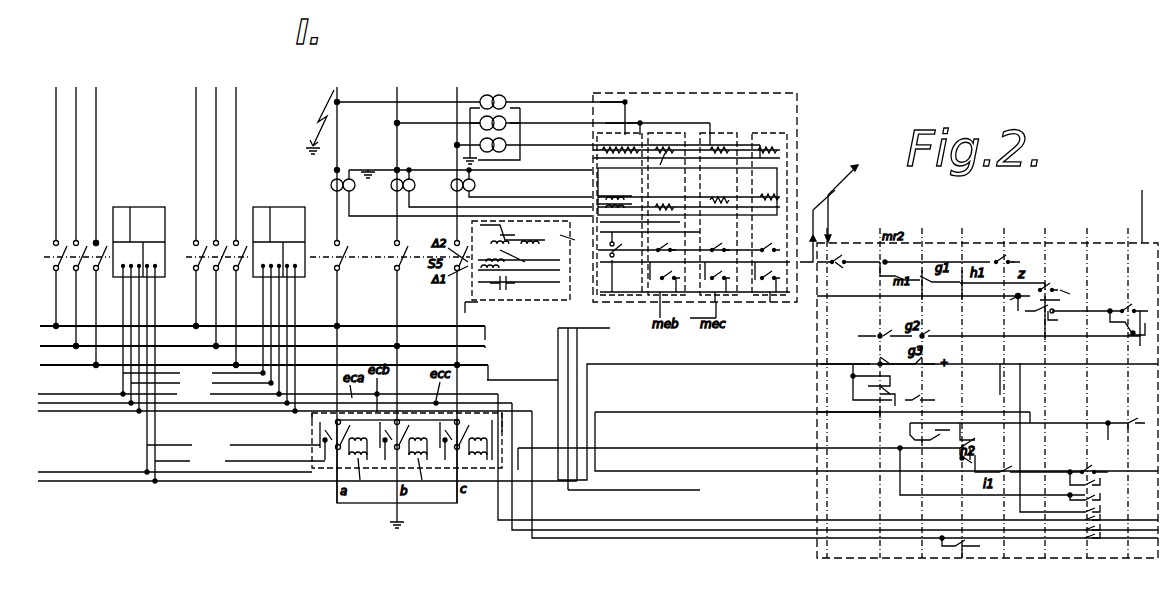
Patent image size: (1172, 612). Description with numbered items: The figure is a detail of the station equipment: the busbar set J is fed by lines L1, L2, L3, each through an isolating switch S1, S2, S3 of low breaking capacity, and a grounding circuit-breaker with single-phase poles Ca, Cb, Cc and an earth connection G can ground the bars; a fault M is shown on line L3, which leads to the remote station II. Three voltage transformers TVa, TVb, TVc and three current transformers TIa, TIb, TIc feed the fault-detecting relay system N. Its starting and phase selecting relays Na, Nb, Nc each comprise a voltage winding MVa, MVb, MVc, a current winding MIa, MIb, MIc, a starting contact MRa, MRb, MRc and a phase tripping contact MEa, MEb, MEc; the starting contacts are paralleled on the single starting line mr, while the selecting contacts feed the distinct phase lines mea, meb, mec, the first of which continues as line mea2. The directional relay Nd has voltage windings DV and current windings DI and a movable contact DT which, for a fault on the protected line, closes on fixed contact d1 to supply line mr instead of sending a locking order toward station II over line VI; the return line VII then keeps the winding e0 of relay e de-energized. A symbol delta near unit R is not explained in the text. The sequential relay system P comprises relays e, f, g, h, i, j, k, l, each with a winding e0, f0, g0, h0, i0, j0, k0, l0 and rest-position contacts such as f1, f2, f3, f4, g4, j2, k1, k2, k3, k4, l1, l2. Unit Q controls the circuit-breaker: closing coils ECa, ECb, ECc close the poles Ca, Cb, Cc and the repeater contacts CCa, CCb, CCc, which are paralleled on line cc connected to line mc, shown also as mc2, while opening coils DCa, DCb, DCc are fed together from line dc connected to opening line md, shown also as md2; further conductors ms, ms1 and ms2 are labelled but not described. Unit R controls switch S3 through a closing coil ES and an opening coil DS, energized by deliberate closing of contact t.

The feeder line L1 is at (81, 211).
The feeder line L2 is at (221, 211).
The feeder line L3 is at (396, 270).
The isolating switch S1 is at (98, 345).
The isolating switch S2 is at (239, 310).
The isolating switch S3 is at (390, 256).
The fault M is at (310, 122).
The voltage transformer TVa is at (481, 94).
The voltage transformer TVb is at (508, 120).
The voltage transformer TVc is at (608, 136).
The current transformer TIa is at (447, 191).
The current transformer TIb is at (482, 187).
The current transformer TIc is at (512, 185).
The system of fault-detecting relays N is at (624, 92).
The directional relay Nd is at (622, 136).
The starting and phase selecting relay Na is at (680, 136).
The starting and phase selecting relay Nb is at (730, 136).
The starting and phase selecting relay Nc is at (780, 136).
The directional relay voltage winding DV is at (598, 154).
The directional relay current winding DI is at (615, 192).
The voltage winding MVa is at (662, 165).
The voltage winding MVb is at (718, 140).
The voltage winding MVc is at (775, 152).
The current winding MIa is at (662, 216).
The current winding MIb is at (714, 213).
The current winding MIc is at (780, 192).
The starting contact MRa is at (663, 240).
The starting contact MRb is at (715, 240).
The starting contact MRc is at (767, 240).
The selecting or phase tripping contact MEa is at (660, 279).
The selecting or phase tripping contact MEb is at (722, 284).
The selecting or phase tripping contact MEc is at (772, 284).
The movable contact of directional relay DT is at (614, 256).
The closing coil ES is at (521, 260).
The tripping or opening coil DS is at (498, 260).
The contact t is at (502, 287).
The fixed contact d1 is at (575, 228).
The phase comparison element delta is at (518, 228).
The isolating switch control unit R is at (471, 311).
The busbar set J is at (247, 345).
The circuit-breaker control unit Q is at (310, 470).
The ground G is at (397, 526).
The circuit-breaker contact Ca is at (335, 418).
The circuit-breaker contact Cb is at (398, 418).
The circuit-breaker contact Cc is at (460, 418).
The closing coil ECa is at (356, 436).
The closing coil ECb is at (416, 436).
The closing coil ECc is at (485, 442).
The tripping or opening coil DCa is at (363, 476).
The tripping or opening coil DCb is at (423, 476).
The tripping or opening coil DCc is at (500, 456).
The repeater auxiliary contact CCa is at (325, 391).
The repeater auxiliary contact CCb is at (385, 480).
The repeater auxiliary contact CCc is at (450, 480).
The repeater contact line cc is at (322, 480).
The opening line dc is at (480, 470).
The phase selection line mea is at (193, 373).
The phase selection line meb is at (201, 383).
The phase selection line mec is at (268, 393).
The phase selection line (relay side) mea2 is at (622, 310).
The opening line md is at (233, 444).
The opening line (control side) md2 is at (672, 418).
The repeater line mc is at (240, 460).
The repeater line (control side) mc2 is at (724, 540).
The signal conductor ms is at (684, 453).
The system of sequential relays P is at (987, 374).
The sequential relay e is at (836, 388).
The sequential relay f is at (880, 383).
The sequential relay g is at (921, 383).
The sequential relay h is at (961, 383).
The sequential relay i is at (1002, 383).
The sequential relay j is at (1041, 383).
The sequential relay k is at (1086, 383).
The sequential relay l is at (1127, 383).
The locking line VI is at (816, 215).
The locking line VII is at (839, 218).
The station II is at (850, 176).
The winding of relay e e0 is at (848, 250).
The starting line mr is at (848, 273).
The contact of relay f f1 is at (956, 272).
The winding of relay i i0 is at (954, 248).
The winding of relay j j0 is at (1062, 280).
The contact of relay j j2 is at (1065, 316).
The winding of relay l l0 is at (1128, 297).
The contact of relay l l1 is at (1126, 331).
The contact of relay l l2 is at (1128, 433).
The contact of relay f f2 is at (994, 326).
The contact of relay f f3 is at (877, 355).
The contact of relay f f4 is at (880, 385).
The winding of relay f f0 is at (848, 419).
The contact of relay g g4 is at (915, 392).
The winding of relay g g0 is at (1010, 433).
The signal conductor 2 ms2 is at (991, 466).
The signal conductor 1 ms1 is at (900, 478).
The winding of relay k k0 is at (1086, 467).
The contact of relay k k1 is at (1100, 484).
The contact of relay k k2 is at (1100, 500).
The contact of relay k k3 is at (1100, 516).
The contact of relay k k4 is at (1100, 534).
The winding of relay h h0 is at (962, 558).